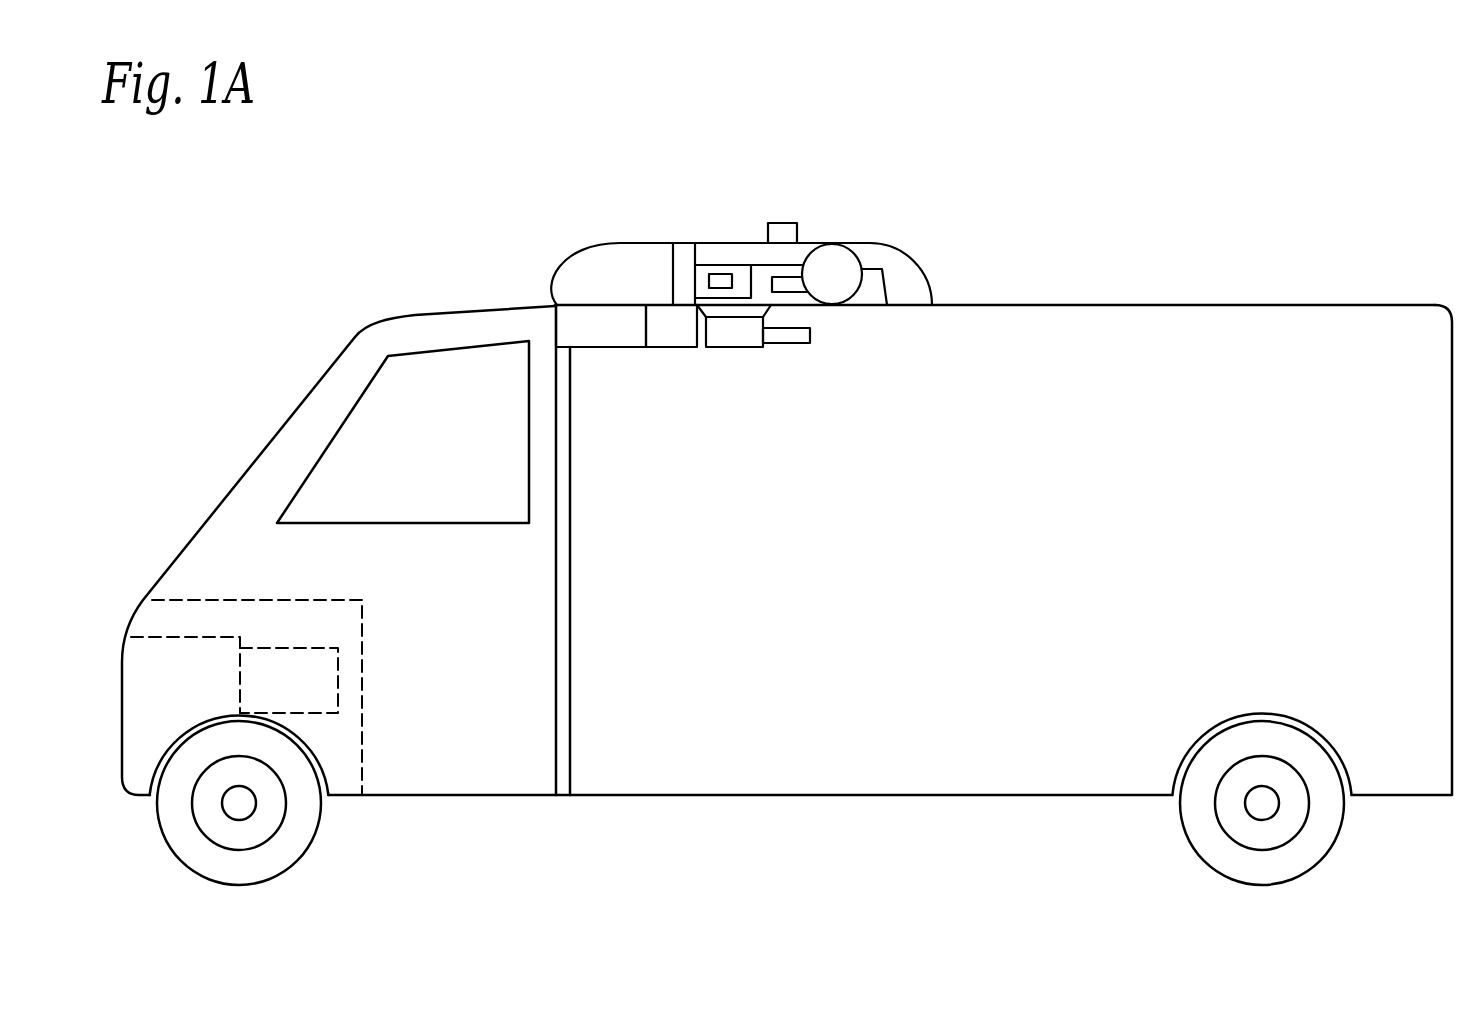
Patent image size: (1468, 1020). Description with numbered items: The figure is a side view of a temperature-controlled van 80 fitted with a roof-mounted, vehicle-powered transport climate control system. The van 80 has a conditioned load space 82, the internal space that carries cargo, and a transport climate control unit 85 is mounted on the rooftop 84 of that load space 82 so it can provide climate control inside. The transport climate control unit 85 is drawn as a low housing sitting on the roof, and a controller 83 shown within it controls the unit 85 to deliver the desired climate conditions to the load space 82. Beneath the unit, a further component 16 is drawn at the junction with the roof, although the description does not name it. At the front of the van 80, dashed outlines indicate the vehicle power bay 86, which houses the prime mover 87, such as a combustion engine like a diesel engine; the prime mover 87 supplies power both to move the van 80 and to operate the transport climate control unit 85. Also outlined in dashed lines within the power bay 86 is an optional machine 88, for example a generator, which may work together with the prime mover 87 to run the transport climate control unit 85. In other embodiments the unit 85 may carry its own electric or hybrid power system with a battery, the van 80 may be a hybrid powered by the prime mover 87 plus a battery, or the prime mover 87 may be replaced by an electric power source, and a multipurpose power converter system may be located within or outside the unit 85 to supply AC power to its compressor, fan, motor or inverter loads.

The temperature-controlled van 80 is at (279, 330).
The conditioned load space 82 is at (1315, 342).
The rooftop 84 is at (1123, 305).
The transport climate control unit 85 is at (903, 255).
The controller 83 is at (722, 272).
The mounting unit 16 is at (658, 320).
The vehicle power bay 86 is at (193, 600).
The prime mover 87 is at (157, 637).
The machine 88 is at (340, 698).